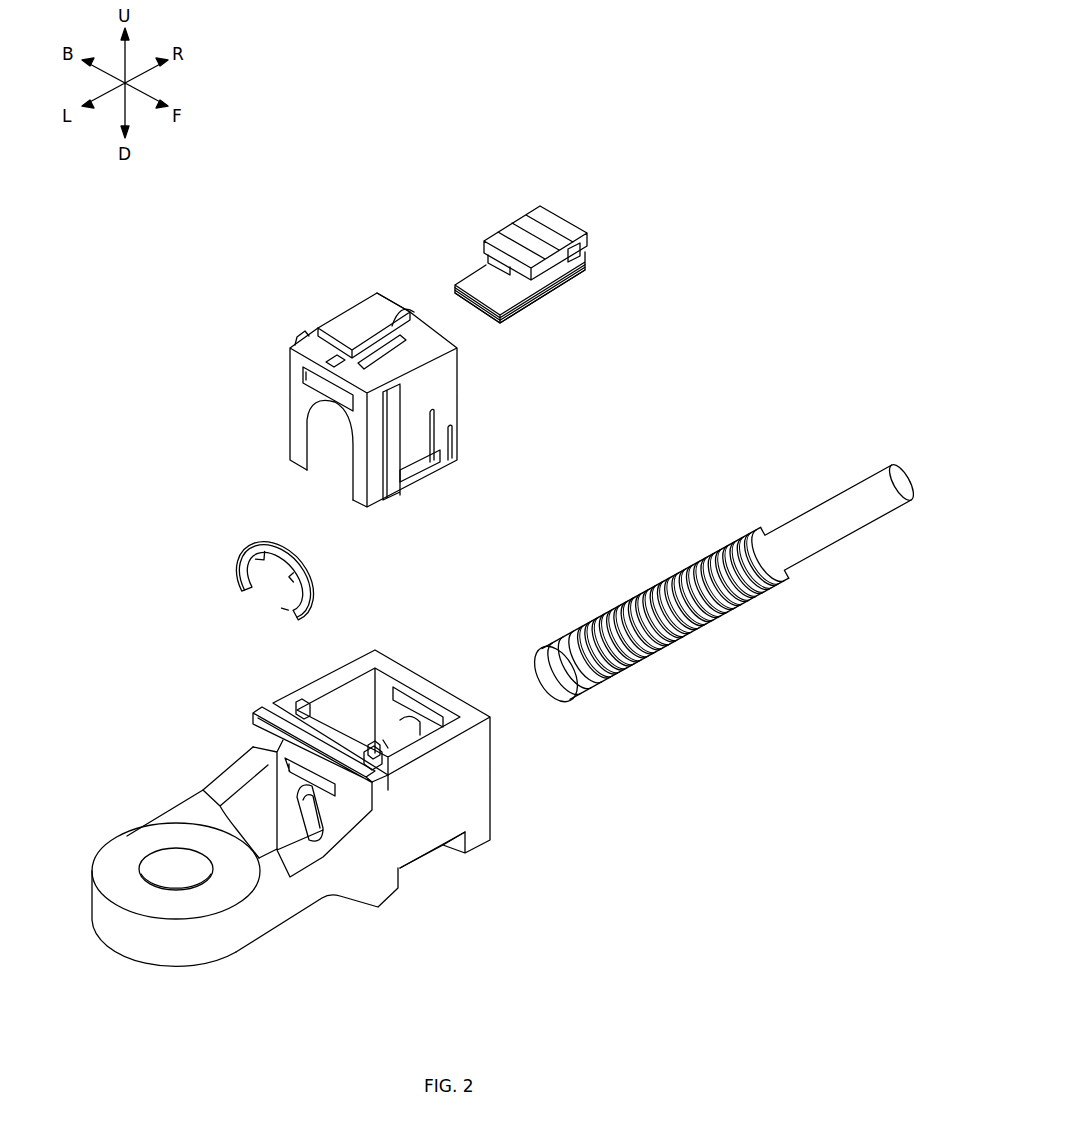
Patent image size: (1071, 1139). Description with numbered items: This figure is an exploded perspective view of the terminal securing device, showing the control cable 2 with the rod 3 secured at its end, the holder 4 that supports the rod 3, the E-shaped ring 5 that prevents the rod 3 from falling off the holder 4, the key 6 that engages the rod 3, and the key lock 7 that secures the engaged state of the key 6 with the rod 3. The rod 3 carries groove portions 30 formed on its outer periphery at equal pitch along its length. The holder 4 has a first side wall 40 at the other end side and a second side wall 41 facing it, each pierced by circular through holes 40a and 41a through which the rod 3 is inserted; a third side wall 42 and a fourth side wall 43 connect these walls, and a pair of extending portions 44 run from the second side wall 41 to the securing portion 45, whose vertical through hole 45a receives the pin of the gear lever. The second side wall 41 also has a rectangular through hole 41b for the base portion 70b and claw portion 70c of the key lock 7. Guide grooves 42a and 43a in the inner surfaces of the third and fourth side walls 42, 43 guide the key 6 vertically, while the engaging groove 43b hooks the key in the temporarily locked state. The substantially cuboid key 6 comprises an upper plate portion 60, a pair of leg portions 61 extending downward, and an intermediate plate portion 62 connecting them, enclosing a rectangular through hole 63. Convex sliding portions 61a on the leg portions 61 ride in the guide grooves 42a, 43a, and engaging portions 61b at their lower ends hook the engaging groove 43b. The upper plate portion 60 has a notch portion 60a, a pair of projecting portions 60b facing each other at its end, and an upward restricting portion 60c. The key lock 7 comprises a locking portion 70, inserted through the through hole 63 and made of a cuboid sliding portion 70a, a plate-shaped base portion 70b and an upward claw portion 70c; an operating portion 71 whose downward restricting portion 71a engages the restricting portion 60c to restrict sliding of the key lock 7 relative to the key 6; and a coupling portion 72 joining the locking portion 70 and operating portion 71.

The control cable 2 is at (818, 533).
The rod 3 is at (560, 690).
The groove portions 30 is at (677, 568).
The holder 4 is at (129, 701).
The first side wall 40 is at (427, 688).
The through hole 40a is at (383, 745).
The second side wall 41 is at (263, 713).
The through hole 41a is at (290, 815).
The through hole 41b is at (262, 756).
The third side wall 42 is at (423, 783).
The guide groove 42a is at (372, 768).
The fourth side wall 43 is at (323, 687).
The guide groove 43a is at (293, 707).
The engaging groove 43b is at (370, 743).
The extending portions 44 is at (277, 867).
The securing portion 45 is at (137, 947).
The through hole 45a is at (172, 862).
The E-shaped ring 5 is at (273, 552).
The key 6 is at (228, 288).
The upper plate portion 60 is at (360, 323).
The notch portion 60a is at (401, 333).
The projecting portions 60b is at (410, 325).
The restricting portion 60c is at (335, 360).
The leg portions 61 is at (296, 431).
The sliding portions 61a is at (303, 335).
The engaging portions 61b is at (420, 477).
The intermediate plate portion 62 is at (322, 403).
The through hole 63 is at (300, 372).
The key lock 7 is at (615, 207).
The locking portion 70 is at (653, 294).
The sliding portion 70a is at (572, 278).
The base portion 70b is at (527, 303).
The claw portion 70c is at (503, 312).
The operating portion 71 is at (526, 216).
The restricting portion 71a is at (503, 271).
The coupling portion 72 is at (580, 254).